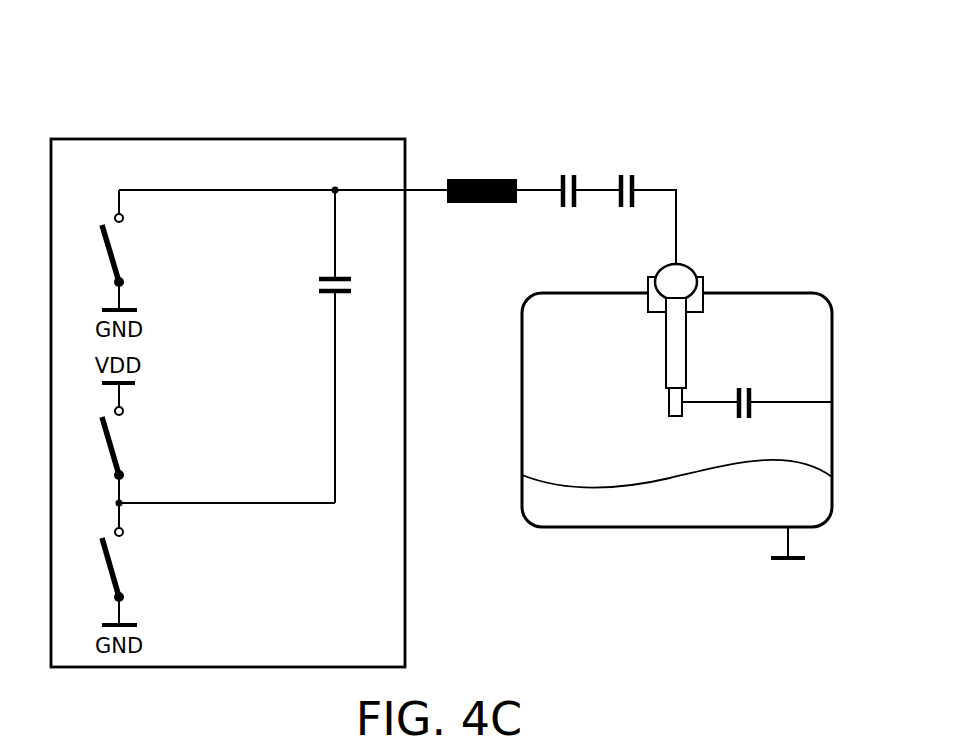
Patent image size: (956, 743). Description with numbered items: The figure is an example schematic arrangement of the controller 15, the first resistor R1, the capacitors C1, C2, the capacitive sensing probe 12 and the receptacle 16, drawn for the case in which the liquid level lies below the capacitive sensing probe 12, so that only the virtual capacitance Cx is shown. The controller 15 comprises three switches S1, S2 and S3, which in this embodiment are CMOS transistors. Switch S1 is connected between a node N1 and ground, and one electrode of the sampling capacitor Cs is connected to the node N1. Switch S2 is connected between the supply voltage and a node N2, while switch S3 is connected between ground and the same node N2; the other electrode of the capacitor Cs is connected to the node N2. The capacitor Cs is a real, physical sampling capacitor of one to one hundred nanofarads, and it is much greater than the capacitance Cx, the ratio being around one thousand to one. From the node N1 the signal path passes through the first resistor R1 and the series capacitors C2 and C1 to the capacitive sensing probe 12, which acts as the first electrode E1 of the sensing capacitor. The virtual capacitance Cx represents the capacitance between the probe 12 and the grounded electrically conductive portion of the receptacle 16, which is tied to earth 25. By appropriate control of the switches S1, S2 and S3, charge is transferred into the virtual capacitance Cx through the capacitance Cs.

The capacitive sensing probe 12 is at (686, 400).
The controller 15 is at (222, 170).
The receptacle 16 is at (789, 510).
The earth 25 is at (788, 558).
The node N1 is at (122, 178).
The node N2 is at (142, 519).
The switch S1 is at (128, 262).
The switch S2 is at (129, 455).
The switch S3 is at (129, 576).
The sampling capacitor Cs is at (352, 346).
The first resistor R1 is at (505, 175).
The capacitor C1 is at (644, 206).
The capacitor C2 is at (587, 177).
The virtual capacitance Cx is at (757, 388).
The first electrode E1 is at (661, 401).